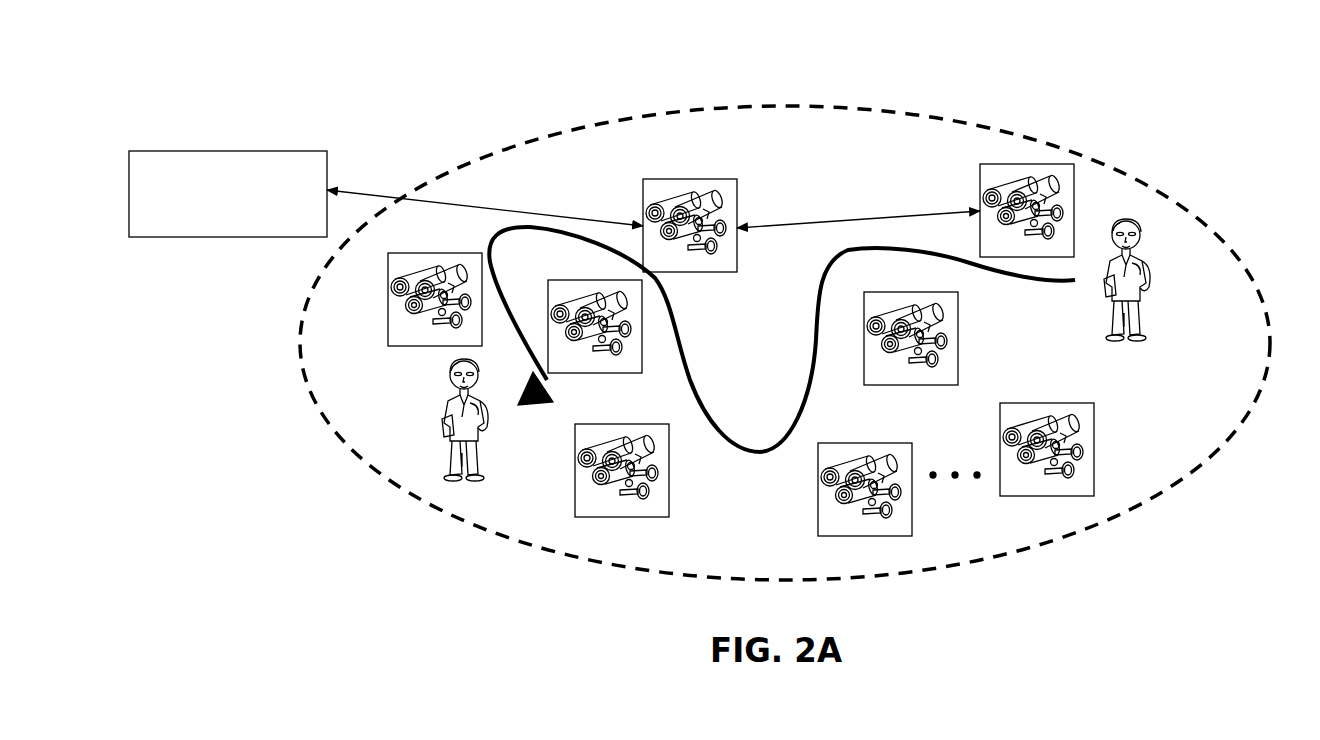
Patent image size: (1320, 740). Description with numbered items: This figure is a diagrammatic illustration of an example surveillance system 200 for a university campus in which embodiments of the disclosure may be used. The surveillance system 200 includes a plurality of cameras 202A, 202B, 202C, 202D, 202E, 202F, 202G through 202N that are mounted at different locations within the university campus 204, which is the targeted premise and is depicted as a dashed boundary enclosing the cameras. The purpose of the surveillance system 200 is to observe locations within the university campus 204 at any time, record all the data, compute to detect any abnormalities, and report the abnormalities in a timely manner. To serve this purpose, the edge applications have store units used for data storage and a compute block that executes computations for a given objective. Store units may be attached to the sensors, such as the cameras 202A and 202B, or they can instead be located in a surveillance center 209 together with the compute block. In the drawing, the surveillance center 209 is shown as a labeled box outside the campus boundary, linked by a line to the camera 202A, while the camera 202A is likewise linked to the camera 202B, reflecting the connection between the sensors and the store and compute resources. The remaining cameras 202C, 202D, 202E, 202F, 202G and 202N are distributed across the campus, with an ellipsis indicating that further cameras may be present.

The surveillance system 200 is at (807, 144).
The university campus 204 is at (528, 138).
The surveillance center 209 is at (302, 151).
The camera 202A is at (628, 187).
The camera 202B is at (970, 187).
The camera 202C is at (380, 325).
The camera 202D is at (588, 382).
The camera 202E is at (565, 492).
The camera 202F is at (973, 335).
The camera 202G is at (810, 492).
The camera 202N is at (1107, 418).